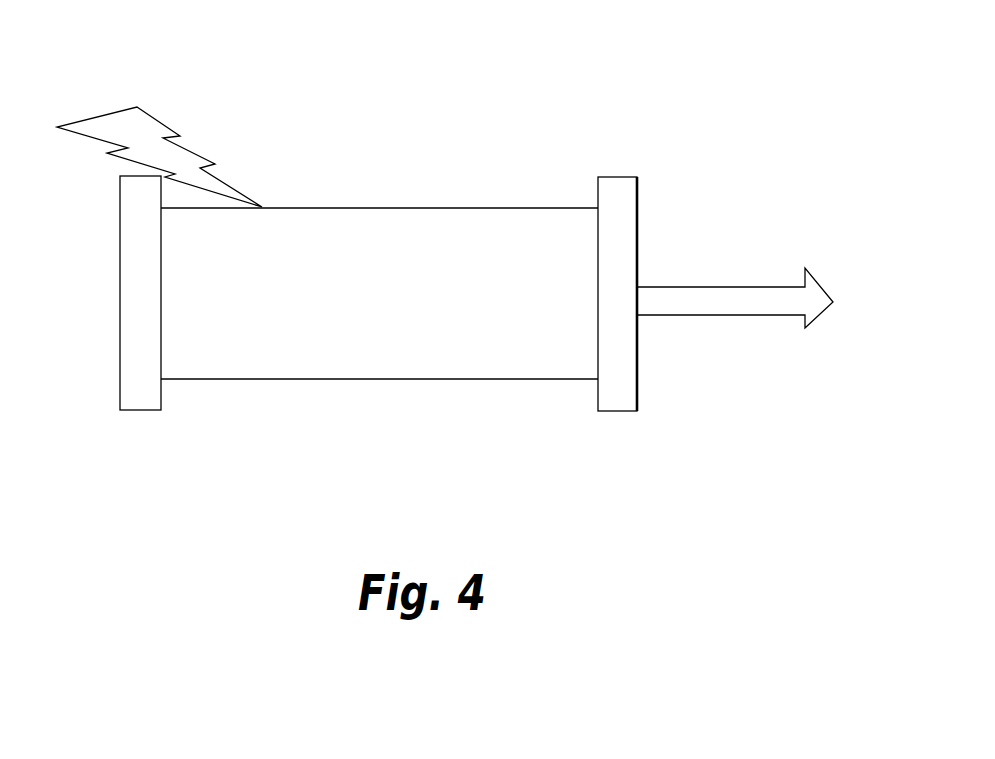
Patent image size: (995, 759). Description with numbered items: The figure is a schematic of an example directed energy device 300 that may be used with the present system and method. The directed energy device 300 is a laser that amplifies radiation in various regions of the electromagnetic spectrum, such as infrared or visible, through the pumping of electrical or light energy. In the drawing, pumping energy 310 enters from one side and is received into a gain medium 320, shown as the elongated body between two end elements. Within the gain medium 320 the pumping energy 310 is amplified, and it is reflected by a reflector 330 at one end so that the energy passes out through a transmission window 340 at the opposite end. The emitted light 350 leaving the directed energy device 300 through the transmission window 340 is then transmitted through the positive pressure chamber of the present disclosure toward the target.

The directed energy device 300 is at (445, 246).
The pumping energy 310 is at (137, 100).
The gain medium 320 is at (391, 200).
The reflector 330 is at (142, 418).
The transmission window 340 is at (617, 419).
The emitted light 350 is at (805, 338).